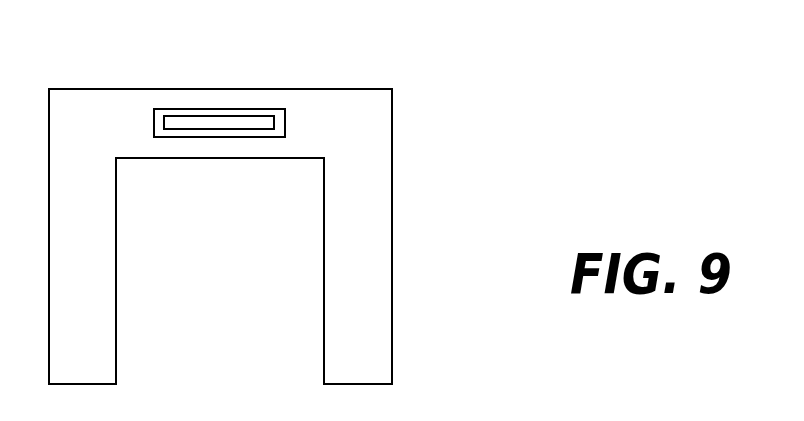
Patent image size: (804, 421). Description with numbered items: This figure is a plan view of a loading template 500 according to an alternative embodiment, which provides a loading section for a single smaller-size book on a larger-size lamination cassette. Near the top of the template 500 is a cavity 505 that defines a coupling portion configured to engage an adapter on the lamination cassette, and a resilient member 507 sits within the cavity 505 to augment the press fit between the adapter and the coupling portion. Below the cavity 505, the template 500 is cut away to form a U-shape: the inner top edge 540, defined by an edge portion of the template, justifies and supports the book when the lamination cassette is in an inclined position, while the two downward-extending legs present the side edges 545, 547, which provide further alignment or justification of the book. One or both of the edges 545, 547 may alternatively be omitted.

The loading template 500 is at (367, 134).
The cavity 505 is at (247, 122).
The resilient member 507 is at (174, 114).
The edge 540 is at (222, 158).
The edge 545 is at (116, 308).
The edge 547 is at (324, 312).